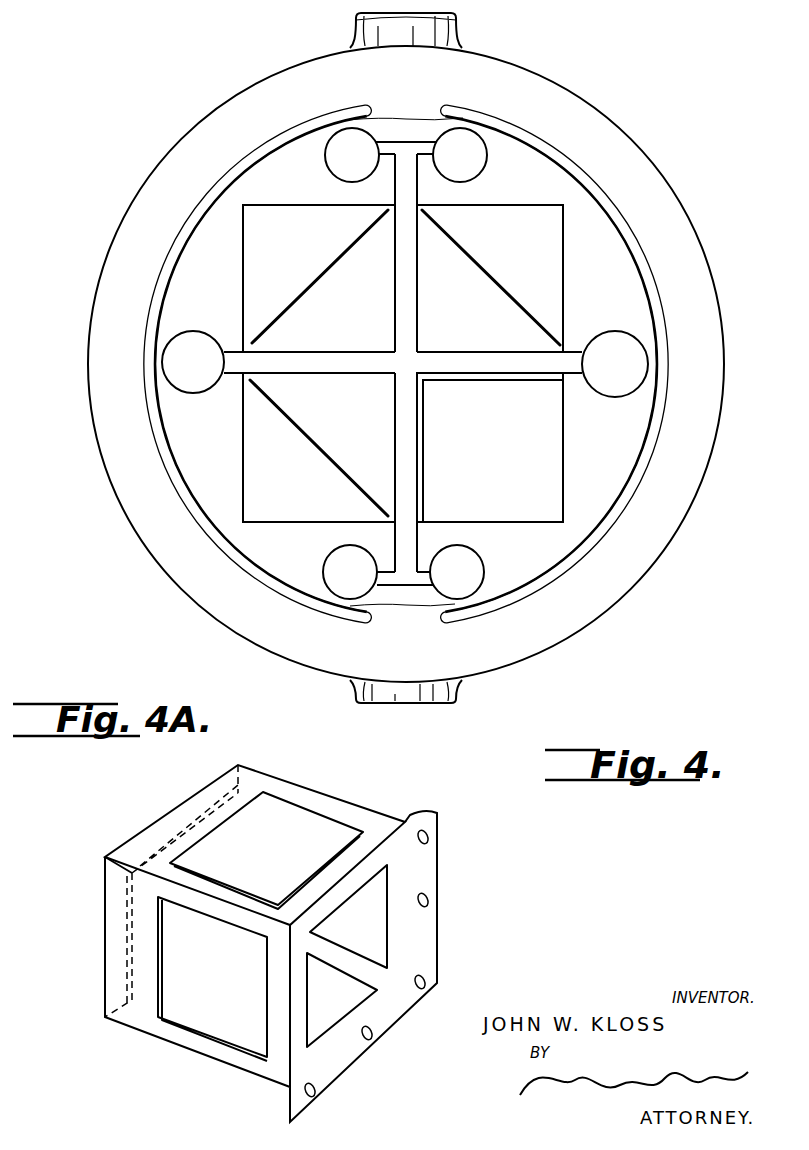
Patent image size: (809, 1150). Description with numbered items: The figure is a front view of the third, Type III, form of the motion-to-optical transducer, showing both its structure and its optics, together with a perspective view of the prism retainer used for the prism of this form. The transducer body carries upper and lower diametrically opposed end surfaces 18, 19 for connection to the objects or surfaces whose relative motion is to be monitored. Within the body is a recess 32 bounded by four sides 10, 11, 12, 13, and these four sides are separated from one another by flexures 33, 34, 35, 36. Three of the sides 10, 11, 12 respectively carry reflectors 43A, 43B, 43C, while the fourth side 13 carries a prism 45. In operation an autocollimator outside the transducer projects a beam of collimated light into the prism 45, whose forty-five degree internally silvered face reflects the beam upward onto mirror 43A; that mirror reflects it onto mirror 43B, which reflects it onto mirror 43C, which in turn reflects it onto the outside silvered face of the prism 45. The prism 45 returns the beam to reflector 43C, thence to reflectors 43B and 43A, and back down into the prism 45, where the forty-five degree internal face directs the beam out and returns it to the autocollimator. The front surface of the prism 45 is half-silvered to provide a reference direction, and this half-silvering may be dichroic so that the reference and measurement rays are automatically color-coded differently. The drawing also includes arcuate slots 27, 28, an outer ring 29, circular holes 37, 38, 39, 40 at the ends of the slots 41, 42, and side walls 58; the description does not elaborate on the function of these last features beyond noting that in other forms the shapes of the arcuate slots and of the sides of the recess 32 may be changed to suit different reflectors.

The side 10 is at (297, 447).
The side 11 is at (291, 278).
The side 12 is at (510, 278).
The fourth side 13 is at (515, 447).
The upper end surface 18 is at (455, 30).
The lower end surface 19 is at (360, 692).
The left arcuate slot 27 is at (253, 158).
The right arcuate slot 28 is at (648, 262).
The outer ring 29 is at (640, 160).
The recess 32 is at (520, 380).
The flexure 33 is at (160, 348).
The flexure 34 is at (650, 356).
The flexure 35 is at (400, 606).
The flexure 36 is at (412, 118).
The left circular hole 37 is at (193, 362).
The right circular hole 38 is at (615, 364).
The upper circular holes 39 is at (406, 155).
The lower circular holes 40 is at (403, 572).
The horizontal slot 41 is at (403, 361).
The vertical slot 42 is at (407, 363).
The reflector 43A is at (480, 256).
The reflector 43B is at (328, 262).
The reflector 43C is at (308, 432).
The prism 45 is at (490, 447).
The side wall 58 is at (245, 290).